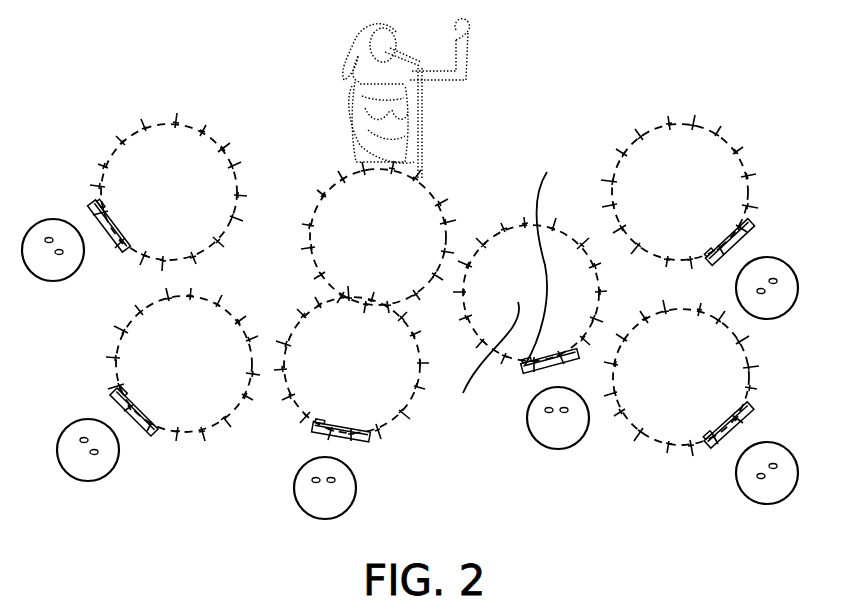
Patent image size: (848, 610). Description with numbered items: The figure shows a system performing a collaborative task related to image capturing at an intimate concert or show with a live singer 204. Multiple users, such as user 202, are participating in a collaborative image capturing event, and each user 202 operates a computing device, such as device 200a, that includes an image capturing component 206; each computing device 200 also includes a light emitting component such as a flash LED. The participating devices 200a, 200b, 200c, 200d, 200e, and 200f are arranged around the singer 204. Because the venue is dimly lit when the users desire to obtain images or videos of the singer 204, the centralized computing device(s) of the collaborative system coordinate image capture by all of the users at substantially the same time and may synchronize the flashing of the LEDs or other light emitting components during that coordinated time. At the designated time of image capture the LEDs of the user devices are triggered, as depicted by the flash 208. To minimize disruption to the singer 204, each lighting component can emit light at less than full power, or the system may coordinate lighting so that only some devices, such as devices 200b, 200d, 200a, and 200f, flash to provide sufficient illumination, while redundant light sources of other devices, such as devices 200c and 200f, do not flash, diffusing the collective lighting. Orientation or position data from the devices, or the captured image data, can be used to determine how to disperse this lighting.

The computing device 200 is at (428, 371).
The computing device 200a is at (525, 374).
The computing device 200b is at (112, 246).
The computing device 200c is at (156, 437).
The computing device 200d is at (313, 435).
The computing device 200e is at (712, 449).
The computing device 200f is at (752, 226).
The user 202 is at (580, 441).
The live singer 204 is at (483, 86).
The image capturing component 206 is at (545, 257).
The flash 208 is at (480, 364).